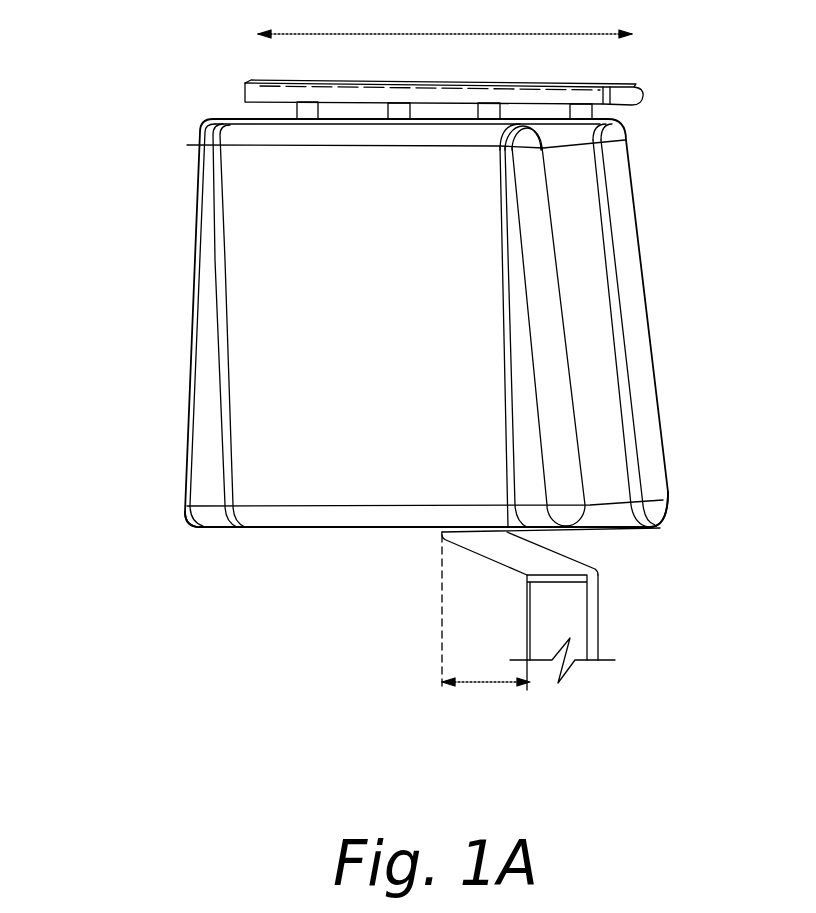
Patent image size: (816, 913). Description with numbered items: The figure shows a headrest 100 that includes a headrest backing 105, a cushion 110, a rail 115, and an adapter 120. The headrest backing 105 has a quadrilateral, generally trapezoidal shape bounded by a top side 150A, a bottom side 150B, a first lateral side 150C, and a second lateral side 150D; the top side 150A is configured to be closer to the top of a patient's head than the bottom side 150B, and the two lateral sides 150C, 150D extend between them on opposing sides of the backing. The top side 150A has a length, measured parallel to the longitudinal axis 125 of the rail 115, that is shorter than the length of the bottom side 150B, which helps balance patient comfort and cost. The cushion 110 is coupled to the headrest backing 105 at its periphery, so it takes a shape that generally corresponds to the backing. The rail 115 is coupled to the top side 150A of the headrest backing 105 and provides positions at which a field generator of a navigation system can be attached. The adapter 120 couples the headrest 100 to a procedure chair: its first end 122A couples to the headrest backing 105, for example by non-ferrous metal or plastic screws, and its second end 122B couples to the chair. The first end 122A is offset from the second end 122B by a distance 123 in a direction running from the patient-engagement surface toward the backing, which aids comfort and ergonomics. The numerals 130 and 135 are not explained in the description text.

The headrest 100 is at (177, 88).
The headrest backing 105 is at (642, 275).
The cushion 110 is at (585, 195).
The rail 115 is at (530, 93).
The adapter 120 is at (587, 638).
The first end 122A is at (442, 532).
The second end 122B is at (553, 602).
The distance 123 is at (488, 685).
The longitudinal axis 125 is at (365, 32).
The front wall of housing 130 is at (187, 387).
The rear edge of housing 135 is at (617, 472).
The top side 150A is at (340, 115).
The bottom side 150B is at (647, 528).
The first lateral side 150C is at (130, 468).
The second lateral side 150D is at (635, 337).